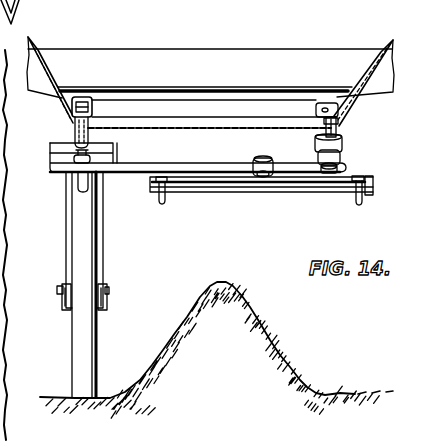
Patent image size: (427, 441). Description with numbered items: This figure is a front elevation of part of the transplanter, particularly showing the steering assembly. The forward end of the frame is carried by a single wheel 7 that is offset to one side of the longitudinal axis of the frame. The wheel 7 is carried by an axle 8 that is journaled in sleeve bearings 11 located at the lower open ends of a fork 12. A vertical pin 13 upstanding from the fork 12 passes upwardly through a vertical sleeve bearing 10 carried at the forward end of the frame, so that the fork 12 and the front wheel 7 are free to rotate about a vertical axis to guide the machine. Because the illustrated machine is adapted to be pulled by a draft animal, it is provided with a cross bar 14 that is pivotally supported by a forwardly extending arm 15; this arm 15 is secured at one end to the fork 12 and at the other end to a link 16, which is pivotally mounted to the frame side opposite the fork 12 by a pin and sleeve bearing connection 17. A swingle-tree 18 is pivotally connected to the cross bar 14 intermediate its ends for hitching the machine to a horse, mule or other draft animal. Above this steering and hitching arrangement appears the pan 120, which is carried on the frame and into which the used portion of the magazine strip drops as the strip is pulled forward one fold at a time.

The pan 120 is at (197, 60).
The vertical pin 13 is at (83, 97).
The vertical sleeve bearing 10 is at (73, 135).
The forwardly extending arm 15 is at (76, 161).
The cross bar 14 is at (191, 168).
The pin and sleeve bearing connection 17 is at (338, 140).
The link 16 is at (342, 157).
The swingle-tree 18 is at (228, 188).
The wheel 7 is at (83, 230).
The fork 12 is at (68, 242).
The sleeve bearings 11 is at (67, 287).
The axle 8 is at (60, 293).